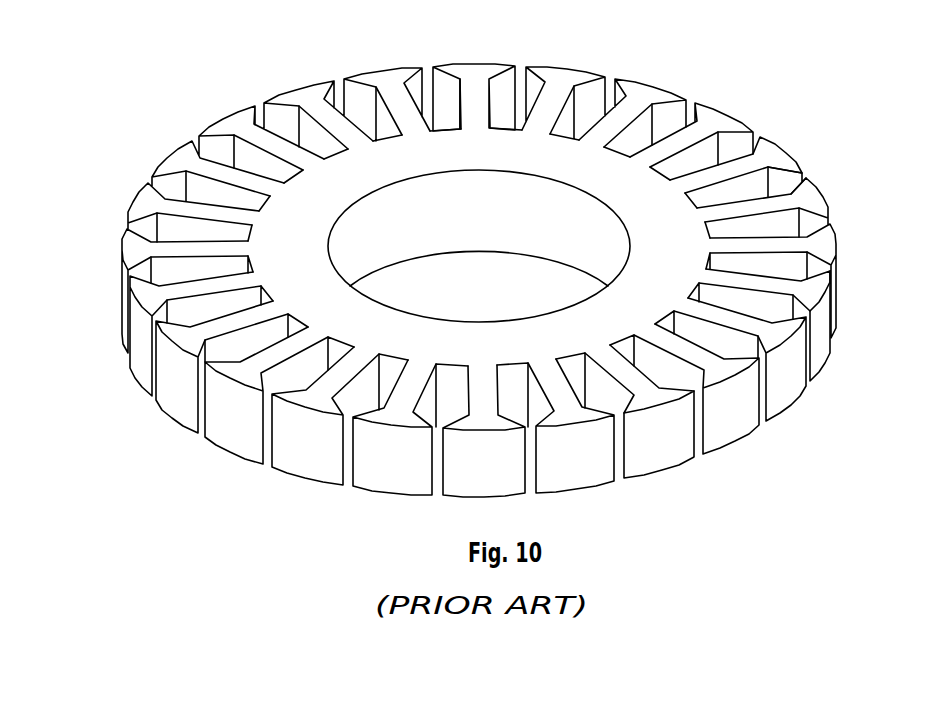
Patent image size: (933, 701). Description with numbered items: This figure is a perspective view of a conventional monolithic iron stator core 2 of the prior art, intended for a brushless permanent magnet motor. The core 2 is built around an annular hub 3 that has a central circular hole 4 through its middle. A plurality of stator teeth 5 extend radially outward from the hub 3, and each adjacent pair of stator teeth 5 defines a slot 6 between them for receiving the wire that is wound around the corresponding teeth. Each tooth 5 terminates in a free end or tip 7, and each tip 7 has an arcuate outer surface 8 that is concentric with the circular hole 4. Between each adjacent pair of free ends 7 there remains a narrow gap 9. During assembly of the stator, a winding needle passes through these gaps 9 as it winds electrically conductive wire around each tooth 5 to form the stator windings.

The monolithic iron stator core 2 is at (727, 59).
The annular hub 3 is at (502, 127).
The central circular hole 4 is at (466, 168).
The stator teeth 5 is at (708, 138).
The slot 6 is at (737, 307).
The free end or tip 7 is at (798, 176).
The arcuate outer surface 8 is at (822, 350).
The narrow gap 9 is at (690, 457).